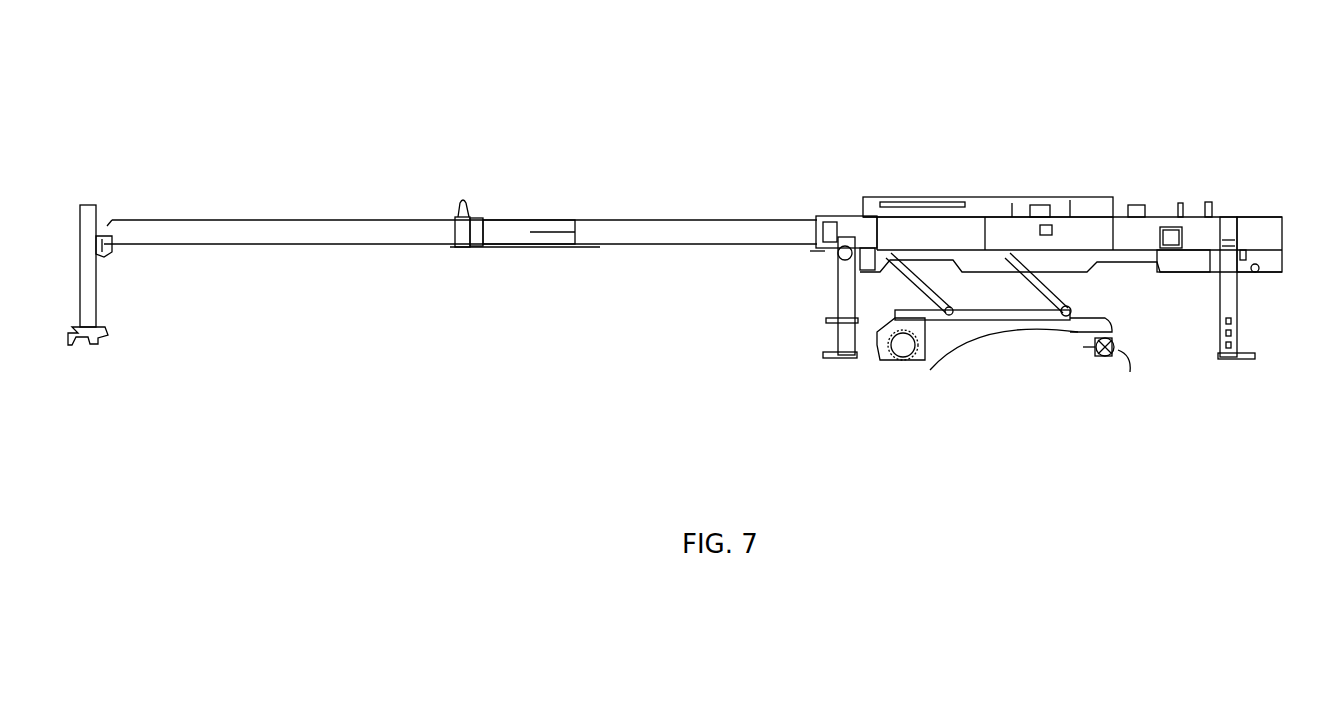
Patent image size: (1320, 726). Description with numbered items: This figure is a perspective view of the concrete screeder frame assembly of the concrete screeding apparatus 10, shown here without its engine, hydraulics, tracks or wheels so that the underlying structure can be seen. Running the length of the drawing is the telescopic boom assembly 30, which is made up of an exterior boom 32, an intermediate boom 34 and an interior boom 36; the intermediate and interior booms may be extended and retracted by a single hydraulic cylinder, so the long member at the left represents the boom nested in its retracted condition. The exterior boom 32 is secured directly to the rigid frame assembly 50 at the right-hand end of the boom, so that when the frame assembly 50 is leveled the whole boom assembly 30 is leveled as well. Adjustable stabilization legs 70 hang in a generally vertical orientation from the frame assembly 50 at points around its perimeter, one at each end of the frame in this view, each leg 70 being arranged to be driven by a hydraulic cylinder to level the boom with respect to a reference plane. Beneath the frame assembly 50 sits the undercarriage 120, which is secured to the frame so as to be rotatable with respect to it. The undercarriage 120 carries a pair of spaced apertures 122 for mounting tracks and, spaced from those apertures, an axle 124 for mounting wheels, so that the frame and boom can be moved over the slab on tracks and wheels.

The concrete screeding apparatus 10 is at (1152, 66).
The telescopic boom assembly 30 is at (868, 225).
The exterior boom 32 is at (215, 225).
The intermediate boom 34 is at (540, 235).
The interior boom 36 is at (840, 230).
The frame assembly 50 is at (1268, 232).
The adjustable stabilization leg 70 is at (838, 305).
The undercarriage 120 is at (945, 340).
The spaced apertures 122 is at (907, 350).
The axle 124 is at (1112, 355).